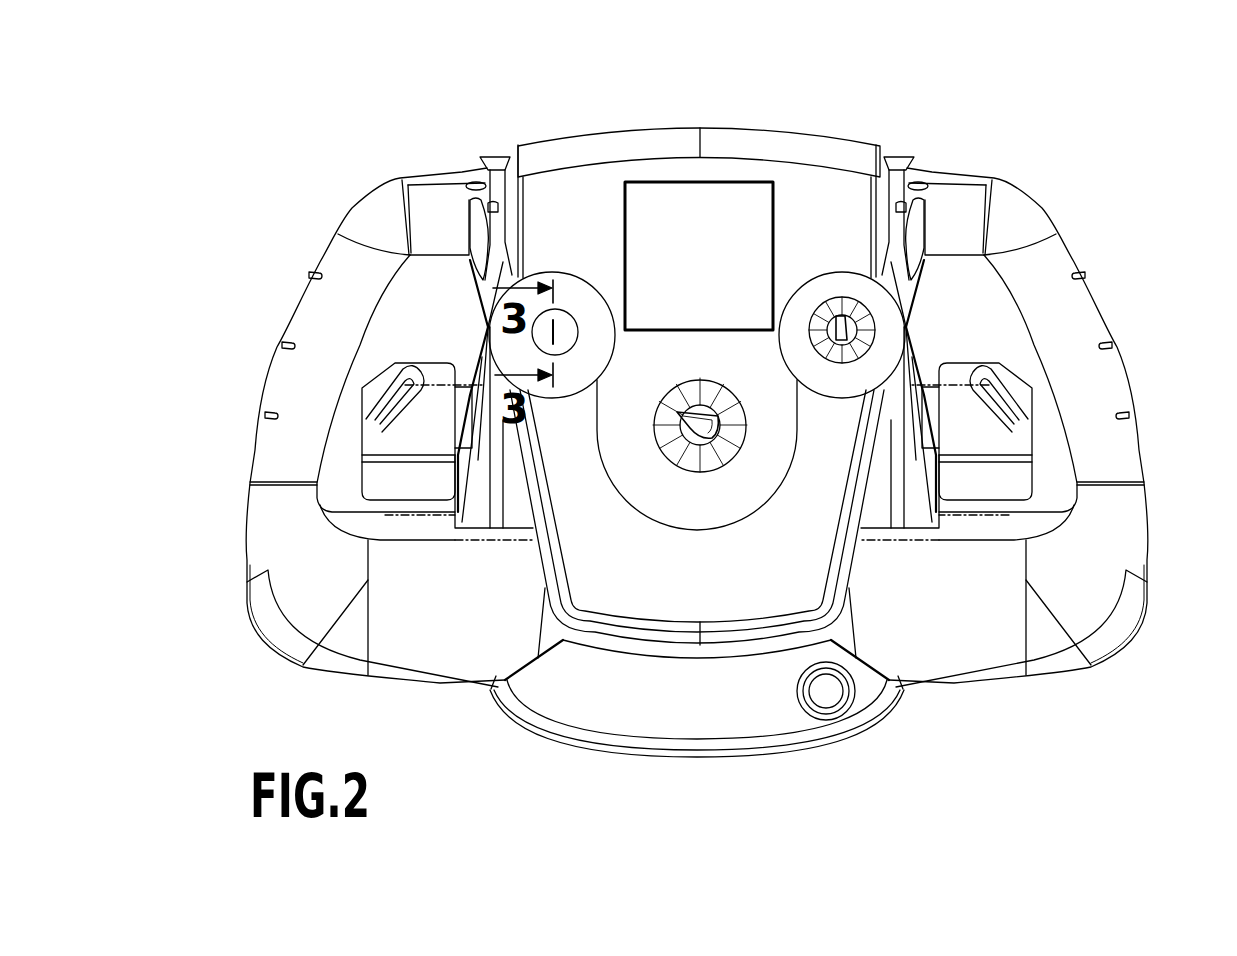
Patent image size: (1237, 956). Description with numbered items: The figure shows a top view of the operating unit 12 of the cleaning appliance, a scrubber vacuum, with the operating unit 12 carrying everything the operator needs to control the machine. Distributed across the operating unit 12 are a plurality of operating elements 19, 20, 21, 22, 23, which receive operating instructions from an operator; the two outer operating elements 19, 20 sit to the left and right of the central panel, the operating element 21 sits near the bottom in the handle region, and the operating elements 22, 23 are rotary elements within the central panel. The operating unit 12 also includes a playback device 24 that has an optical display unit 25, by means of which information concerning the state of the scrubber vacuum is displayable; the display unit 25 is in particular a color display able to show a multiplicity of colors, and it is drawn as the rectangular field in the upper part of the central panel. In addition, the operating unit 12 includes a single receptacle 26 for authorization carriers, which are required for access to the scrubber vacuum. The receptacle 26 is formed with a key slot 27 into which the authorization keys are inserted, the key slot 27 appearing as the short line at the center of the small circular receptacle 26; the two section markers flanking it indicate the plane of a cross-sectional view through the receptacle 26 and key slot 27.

The operating unit 12 is at (1050, 125).
The operating element 19 is at (387, 440).
The operating element 20 is at (995, 437).
The operating element 21 is at (823, 690).
The operating element 22 is at (673, 450).
The operating element 23 is at (833, 331).
The playback device 24 is at (788, 190).
The optical display unit 25 is at (760, 243).
The receptacle 26 is at (578, 310).
The key slot 27 is at (560, 332).